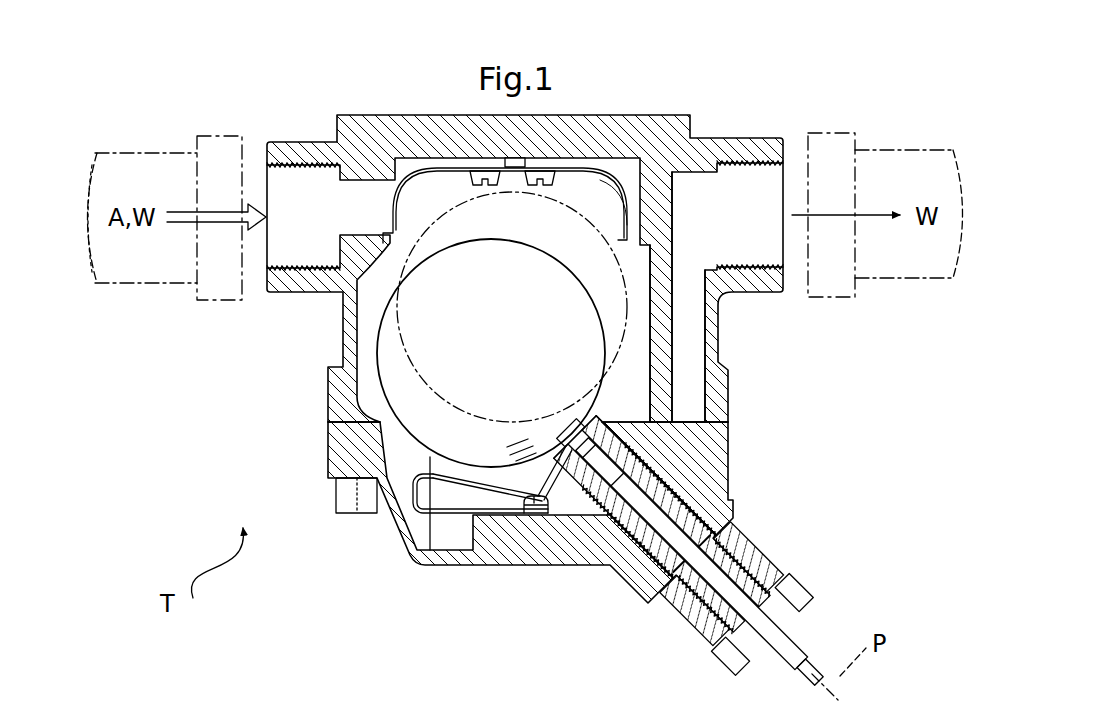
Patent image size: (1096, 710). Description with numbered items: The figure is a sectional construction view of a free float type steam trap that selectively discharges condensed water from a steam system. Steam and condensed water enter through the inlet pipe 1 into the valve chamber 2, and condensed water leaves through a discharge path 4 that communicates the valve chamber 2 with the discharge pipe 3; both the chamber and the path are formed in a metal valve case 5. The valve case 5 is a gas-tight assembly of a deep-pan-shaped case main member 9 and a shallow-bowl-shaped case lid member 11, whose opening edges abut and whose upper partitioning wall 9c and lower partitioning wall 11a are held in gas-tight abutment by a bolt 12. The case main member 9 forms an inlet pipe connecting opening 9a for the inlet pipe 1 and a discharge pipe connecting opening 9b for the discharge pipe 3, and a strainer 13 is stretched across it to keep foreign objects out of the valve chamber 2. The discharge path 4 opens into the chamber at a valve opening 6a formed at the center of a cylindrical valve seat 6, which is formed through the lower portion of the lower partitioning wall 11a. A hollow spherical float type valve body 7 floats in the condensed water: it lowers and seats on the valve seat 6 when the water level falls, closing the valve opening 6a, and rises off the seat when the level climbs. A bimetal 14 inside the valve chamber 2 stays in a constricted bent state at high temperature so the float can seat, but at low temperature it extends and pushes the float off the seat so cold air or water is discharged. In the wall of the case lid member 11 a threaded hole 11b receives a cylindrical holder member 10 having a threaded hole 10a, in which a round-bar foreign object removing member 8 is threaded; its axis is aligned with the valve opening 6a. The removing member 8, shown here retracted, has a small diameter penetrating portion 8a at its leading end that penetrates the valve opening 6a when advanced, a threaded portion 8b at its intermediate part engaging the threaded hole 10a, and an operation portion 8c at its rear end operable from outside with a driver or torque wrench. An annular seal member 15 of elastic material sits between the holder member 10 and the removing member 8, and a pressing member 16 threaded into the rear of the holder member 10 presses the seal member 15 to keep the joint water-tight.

The inlet pipe 1 is at (176, 284).
The valve chamber 2 is at (432, 342).
The discharge pipe 3 is at (870, 284).
The discharge path 4 is at (690, 366).
The valve case 5 is at (250, 385).
The valve seat 6 is at (571, 452).
The valve opening 6a is at (571, 436).
The float type valve body 7 is at (540, 263).
The foreign object removing member 8 is at (601, 561).
The penetrating portion 8a is at (633, 333).
The threaded portion 8b is at (706, 531).
The operation portion 8c is at (812, 660).
The case main member 9 is at (333, 402).
The inlet pipe connecting opening 9a is at (272, 292).
The discharge pipe connecting opening 9b is at (774, 294).
The upper partitioning wall 9c is at (650, 315).
The cylindrical holder member 10 is at (783, 559).
The threaded hole 10a is at (700, 615).
The case lid member 11 is at (333, 458).
The lower partitioning wall 11a is at (661, 441).
The threaded hole 11b is at (691, 477).
The bolt 12 is at (346, 500).
The strainer 13 is at (392, 212).
The bimetal 14 is at (481, 481).
The annular seal member 15 is at (668, 566).
The pressing member 16 is at (804, 587).